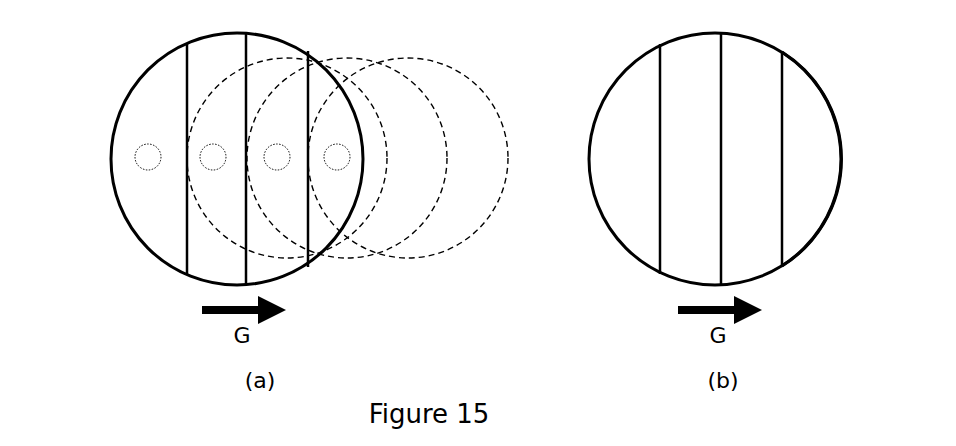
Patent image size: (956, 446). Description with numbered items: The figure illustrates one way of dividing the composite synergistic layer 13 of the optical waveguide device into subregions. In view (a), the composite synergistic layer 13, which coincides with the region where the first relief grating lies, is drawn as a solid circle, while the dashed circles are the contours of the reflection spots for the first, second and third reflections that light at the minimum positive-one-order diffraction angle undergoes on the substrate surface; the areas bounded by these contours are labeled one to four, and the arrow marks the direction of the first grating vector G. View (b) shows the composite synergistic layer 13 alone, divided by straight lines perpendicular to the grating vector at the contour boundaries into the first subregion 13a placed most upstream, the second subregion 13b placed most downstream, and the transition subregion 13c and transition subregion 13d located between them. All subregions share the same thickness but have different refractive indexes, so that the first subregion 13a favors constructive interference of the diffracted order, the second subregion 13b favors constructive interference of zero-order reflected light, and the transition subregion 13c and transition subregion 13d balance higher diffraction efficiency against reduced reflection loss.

The composite synergistic layer 13 is at (696, 177).
The first subregion 13a is at (643, 168).
The second subregion 13b is at (830, 168).
The transition subregion 13c is at (708, 168).
The transition subregion 13d is at (770, 168).